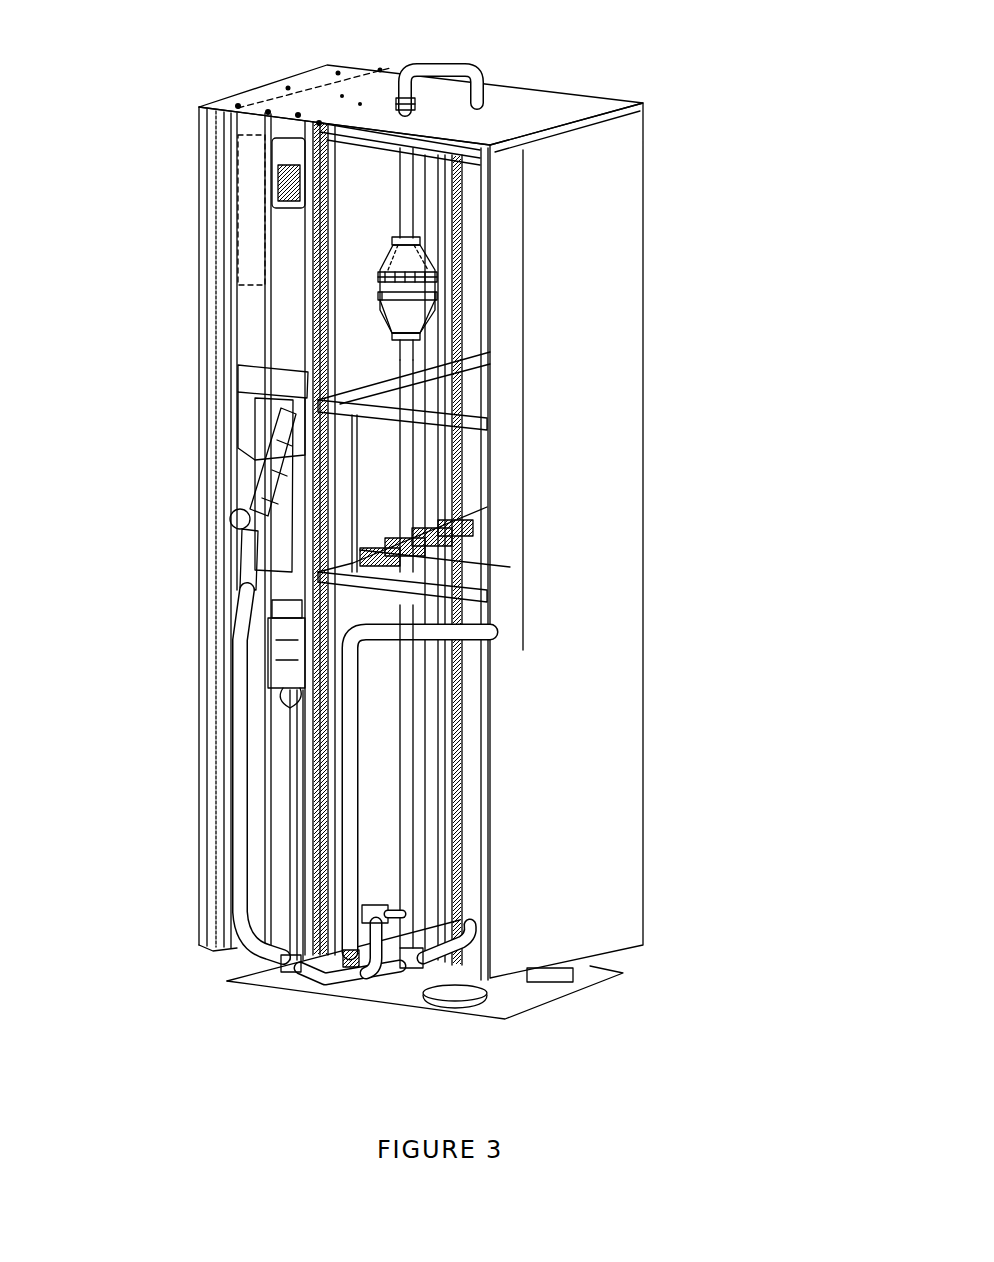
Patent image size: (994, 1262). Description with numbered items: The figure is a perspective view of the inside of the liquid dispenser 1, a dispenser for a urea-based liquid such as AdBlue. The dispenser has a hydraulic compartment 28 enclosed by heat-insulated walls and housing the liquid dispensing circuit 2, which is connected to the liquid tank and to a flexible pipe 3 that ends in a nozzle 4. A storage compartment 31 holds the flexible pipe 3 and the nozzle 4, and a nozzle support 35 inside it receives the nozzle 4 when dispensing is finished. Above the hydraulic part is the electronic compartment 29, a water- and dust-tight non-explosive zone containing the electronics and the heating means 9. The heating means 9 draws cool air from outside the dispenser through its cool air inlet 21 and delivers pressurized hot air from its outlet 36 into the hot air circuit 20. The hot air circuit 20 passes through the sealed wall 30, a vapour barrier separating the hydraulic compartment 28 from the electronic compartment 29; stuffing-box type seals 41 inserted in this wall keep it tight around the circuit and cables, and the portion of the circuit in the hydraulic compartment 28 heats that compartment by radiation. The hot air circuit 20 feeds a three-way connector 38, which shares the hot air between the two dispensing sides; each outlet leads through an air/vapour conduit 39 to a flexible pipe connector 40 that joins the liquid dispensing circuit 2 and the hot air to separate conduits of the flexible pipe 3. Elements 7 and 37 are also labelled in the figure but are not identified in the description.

The liquid dispenser 1 is at (643, 190).
The liquid dispensing circuit 2 is at (347, 722).
The flexible pipe 3 is at (230, 725).
The nozzle 4 is at (245, 565).
The filter unit 7 is at (443, 257).
The heating means 9 is at (424, 312).
The hot air circuit 20 is at (405, 465).
The cool air inlet 21 is at (432, 224).
The hydraulic compartment 28 is at (488, 833).
The electronic compartment 29 is at (490, 393).
The sealed wall 30 is at (465, 542).
The storage compartment 31 is at (205, 248).
The nozzle support 35 is at (245, 425).
The outlet 36 is at (421, 340).
The vent pipe 37 is at (450, 64).
The three-way connector 38 is at (410, 970).
The air/vapour conduit 39 is at (473, 940).
The flexible pipe connector 40 is at (375, 905).
The seals 41 is at (470, 565).